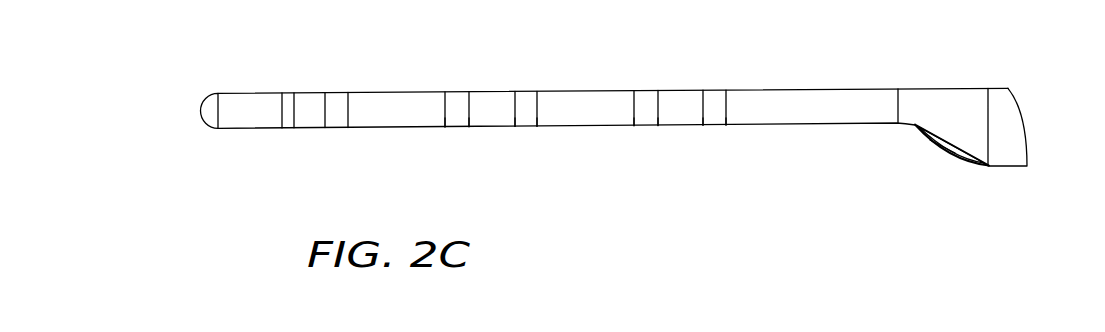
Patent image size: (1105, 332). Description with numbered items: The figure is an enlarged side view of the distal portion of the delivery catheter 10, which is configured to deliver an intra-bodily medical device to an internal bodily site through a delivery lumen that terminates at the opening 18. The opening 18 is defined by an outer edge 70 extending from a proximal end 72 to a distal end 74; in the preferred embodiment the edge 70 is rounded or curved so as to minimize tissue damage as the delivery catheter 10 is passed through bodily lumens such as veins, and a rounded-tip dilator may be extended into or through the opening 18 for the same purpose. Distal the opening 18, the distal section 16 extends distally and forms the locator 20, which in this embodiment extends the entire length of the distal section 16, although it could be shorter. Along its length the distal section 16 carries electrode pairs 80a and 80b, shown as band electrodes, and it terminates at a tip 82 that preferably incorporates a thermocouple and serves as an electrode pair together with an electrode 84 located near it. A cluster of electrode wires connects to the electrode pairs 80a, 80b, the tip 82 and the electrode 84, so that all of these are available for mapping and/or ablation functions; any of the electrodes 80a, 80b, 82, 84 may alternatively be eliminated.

The delivery catheter 10 is at (764, 18).
The distal section 16 is at (837, 145).
The opening 18 is at (940, 143).
The locator 20 is at (493, 88).
The outer edge 70 is at (947, 143).
The proximal end 72 is at (989, 167).
The distal end 74 is at (913, 127).
The electrode pair 80a is at (720, 117).
The electrode pair 80b is at (531, 117).
The tip 82 is at (258, 118).
The electrode 84 is at (333, 119).